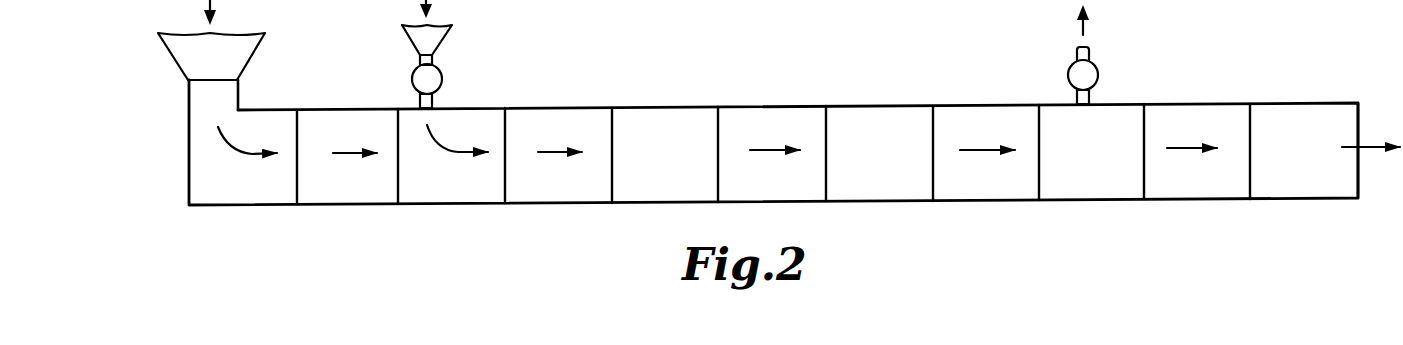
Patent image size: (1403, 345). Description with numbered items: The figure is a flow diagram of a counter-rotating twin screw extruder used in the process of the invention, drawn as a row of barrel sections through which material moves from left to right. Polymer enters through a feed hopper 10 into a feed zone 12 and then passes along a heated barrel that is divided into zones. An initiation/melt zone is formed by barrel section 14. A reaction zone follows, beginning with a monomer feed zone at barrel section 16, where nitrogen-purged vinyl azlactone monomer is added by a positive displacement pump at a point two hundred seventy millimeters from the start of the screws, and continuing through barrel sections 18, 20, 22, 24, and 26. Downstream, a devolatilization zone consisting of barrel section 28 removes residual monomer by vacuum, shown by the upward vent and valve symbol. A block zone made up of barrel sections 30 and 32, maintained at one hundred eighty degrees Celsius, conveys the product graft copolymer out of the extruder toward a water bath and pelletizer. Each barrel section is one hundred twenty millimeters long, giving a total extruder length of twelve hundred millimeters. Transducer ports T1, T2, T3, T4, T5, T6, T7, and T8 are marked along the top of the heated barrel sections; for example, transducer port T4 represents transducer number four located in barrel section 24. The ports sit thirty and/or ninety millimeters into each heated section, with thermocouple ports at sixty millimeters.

The feed hopper 10 is at (182, 58).
The feed zone 12 is at (239, 198).
The barrel section 14 is at (350, 195).
The monomer feed zone barrel section 16 is at (448, 192).
The barrel section 18 is at (551, 192).
The barrel section 20 is at (652, 192).
The barrel section 22 is at (790, 112).
The barrel section 24 is at (896, 190).
The barrel section 26 is at (992, 190).
The barrel section 28 is at (1089, 193).
The barrel section 30 is at (1198, 192).
The barrel section 32 is at (1307, 180).
The transducer port T1 is at (354, 112).
The transducer port T2 is at (478, 112).
The transducer port T3 is at (573, 112).
The transducer port T4 is at (897, 112).
The transducer port T5 is at (1000, 113).
The transducer port T6 is at (1152, 112).
The transducer port T7 is at (1215, 110).
The transducer port T8 is at (1305, 108).